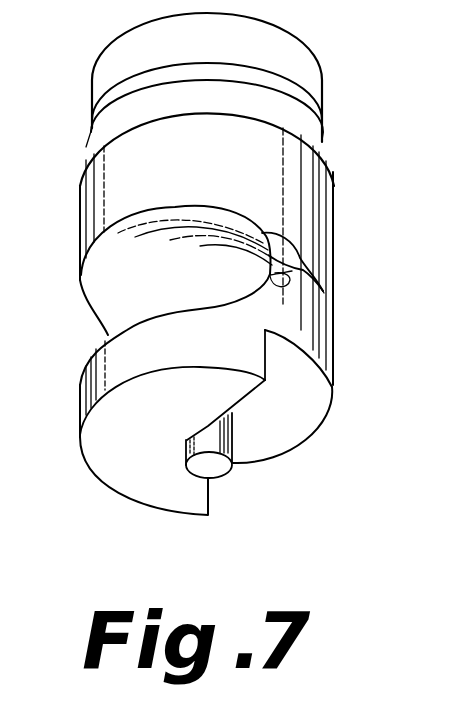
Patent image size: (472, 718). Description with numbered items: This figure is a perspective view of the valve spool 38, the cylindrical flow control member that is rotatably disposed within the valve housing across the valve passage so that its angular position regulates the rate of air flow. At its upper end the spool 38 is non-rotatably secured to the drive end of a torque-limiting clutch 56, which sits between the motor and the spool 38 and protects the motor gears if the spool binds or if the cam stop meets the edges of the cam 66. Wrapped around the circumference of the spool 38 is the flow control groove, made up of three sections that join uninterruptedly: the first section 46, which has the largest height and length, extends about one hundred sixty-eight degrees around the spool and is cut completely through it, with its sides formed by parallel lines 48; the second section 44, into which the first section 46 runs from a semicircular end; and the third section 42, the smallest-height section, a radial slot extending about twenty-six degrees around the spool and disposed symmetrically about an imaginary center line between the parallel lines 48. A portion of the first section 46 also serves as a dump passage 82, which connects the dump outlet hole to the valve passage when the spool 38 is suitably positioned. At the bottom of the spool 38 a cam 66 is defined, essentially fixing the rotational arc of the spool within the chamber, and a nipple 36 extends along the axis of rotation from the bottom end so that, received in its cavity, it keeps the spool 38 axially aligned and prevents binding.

The nipple 36 is at (217, 467).
The valve spool 38 is at (333, 203).
The third section of groove (boundary) 42 is at (326, 280).
The second section of groove (boundary) 44 is at (272, 259).
The first section of groove (boundary) 46 is at (213, 221).
The parallel lines 48 is at (177, 209).
The torque-limiting clutch 56 is at (312, 85).
The cam 66 is at (303, 415).
The dump passage 82 is at (114, 300).